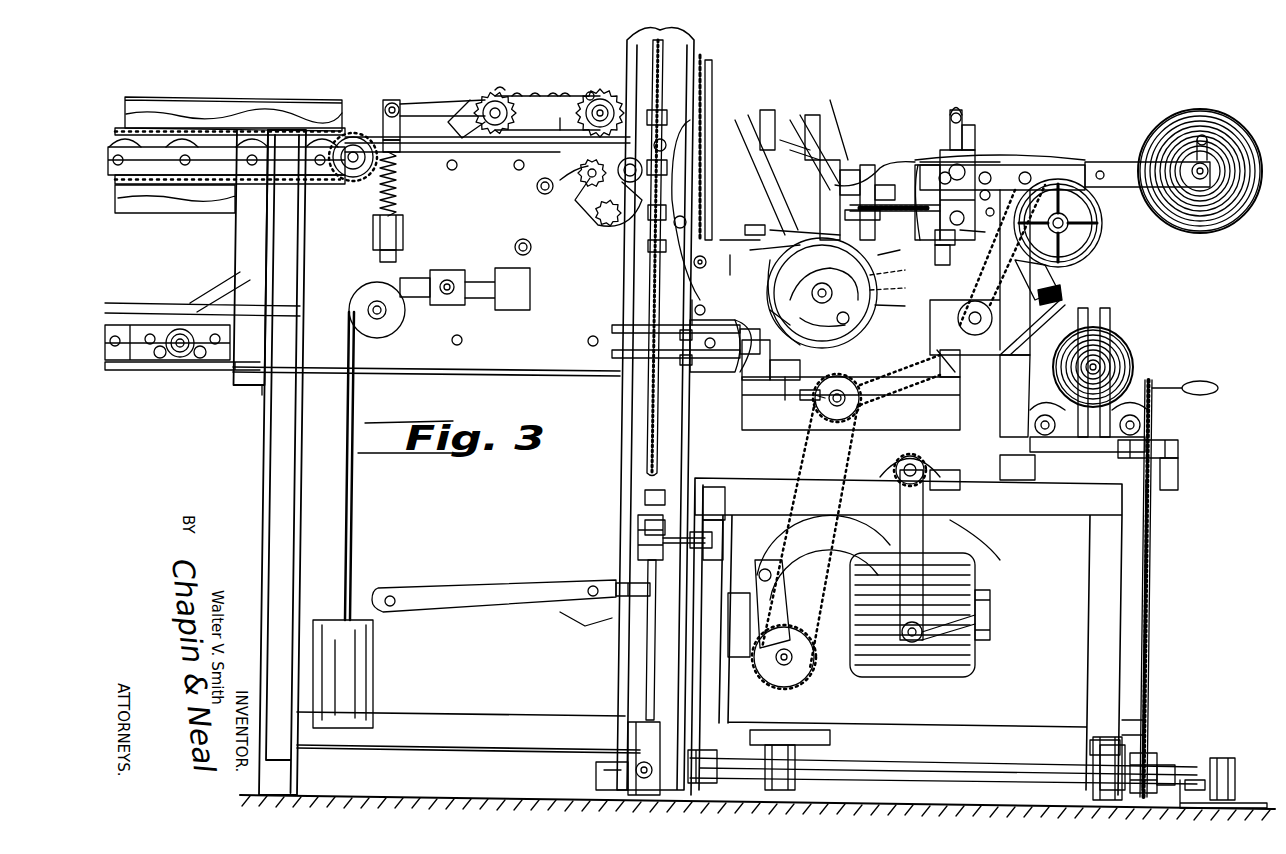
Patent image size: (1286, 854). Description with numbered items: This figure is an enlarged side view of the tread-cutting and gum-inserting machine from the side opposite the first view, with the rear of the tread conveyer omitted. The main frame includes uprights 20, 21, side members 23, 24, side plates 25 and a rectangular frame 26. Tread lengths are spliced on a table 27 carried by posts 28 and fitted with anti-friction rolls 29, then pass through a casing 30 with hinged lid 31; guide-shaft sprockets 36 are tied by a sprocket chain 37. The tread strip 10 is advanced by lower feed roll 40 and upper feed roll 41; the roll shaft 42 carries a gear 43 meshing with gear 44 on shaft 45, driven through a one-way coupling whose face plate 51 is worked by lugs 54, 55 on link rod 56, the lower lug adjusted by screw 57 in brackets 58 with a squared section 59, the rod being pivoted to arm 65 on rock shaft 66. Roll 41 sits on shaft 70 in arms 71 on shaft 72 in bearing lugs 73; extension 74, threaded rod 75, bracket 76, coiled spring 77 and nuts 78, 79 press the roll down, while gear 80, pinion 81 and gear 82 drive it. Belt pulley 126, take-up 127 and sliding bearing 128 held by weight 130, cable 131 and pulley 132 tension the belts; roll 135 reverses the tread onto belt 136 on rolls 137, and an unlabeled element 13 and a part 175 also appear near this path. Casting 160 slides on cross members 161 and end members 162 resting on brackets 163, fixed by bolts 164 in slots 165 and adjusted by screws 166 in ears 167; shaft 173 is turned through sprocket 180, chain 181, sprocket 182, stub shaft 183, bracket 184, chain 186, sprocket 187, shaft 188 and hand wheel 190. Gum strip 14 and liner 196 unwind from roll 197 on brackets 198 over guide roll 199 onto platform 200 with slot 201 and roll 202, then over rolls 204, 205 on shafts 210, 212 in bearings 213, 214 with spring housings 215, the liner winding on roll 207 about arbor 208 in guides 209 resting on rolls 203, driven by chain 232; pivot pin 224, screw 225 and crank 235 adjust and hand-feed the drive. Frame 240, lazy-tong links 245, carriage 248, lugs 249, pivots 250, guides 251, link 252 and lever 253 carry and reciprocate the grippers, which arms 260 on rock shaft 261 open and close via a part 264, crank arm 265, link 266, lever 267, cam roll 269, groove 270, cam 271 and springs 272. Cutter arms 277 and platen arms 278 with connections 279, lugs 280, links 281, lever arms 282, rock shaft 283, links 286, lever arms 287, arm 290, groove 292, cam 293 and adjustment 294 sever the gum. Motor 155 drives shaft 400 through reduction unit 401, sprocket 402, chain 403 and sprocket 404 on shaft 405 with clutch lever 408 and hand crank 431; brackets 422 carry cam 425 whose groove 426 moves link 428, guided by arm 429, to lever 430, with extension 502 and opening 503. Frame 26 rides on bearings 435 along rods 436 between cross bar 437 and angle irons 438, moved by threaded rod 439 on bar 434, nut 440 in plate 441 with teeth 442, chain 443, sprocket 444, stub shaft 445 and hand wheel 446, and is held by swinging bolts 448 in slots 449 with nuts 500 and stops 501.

The tread strip 10 is at (160, 303).
The shaft 13 is at (740, 332).
The gum strip 14 is at (885, 180).
The uprights 20 is at (626, 472).
The uprights 21 is at (266, 455).
The longitudinal side member 23 is at (462, 714).
The longitudinal side member 24 is at (125, 350).
The side plates 25 is at (490, 374).
The rectangular frame member 26 is at (1090, 540).
The table member 27 is at (114, 175).
The posts 28 is at (236, 254).
The anti-friction rolls 29 is at (165, 148).
The casing 30 is at (238, 106).
The hinged lid 31 is at (182, 98).
The sprockets 36 is at (350, 178).
The sprocket chain 37 is at (112, 128).
The lower feed roll 40 is at (560, 160).
The upper feed roll 41 is at (578, 90).
The shaft 42 is at (550, 196).
The gear 43 is at (583, 185).
The gear 44 is at (598, 186).
The shaft 45 is at (655, 145).
The face plate 51 is at (600, 222).
The upper lug 54 is at (630, 182).
The lower lug 55 is at (612, 225).
The link rod 56 is at (650, 414).
The screw 57 is at (690, 120).
The brackets 58 is at (655, 108).
The squared section 59 is at (690, 215).
The arm 65 is at (628, 775).
The rock shaft 66 is at (596, 775).
The shaft 70 is at (606, 92).
The arms 71 is at (528, 100).
The shaft 72 is at (492, 130).
The bearing lugs 73 is at (458, 112).
The extension 74 is at (400, 104).
The threaded rod 75 is at (400, 150).
The bracket 76 is at (403, 238).
The coiled spring 77 is at (398, 193).
The nuts 78 is at (400, 168).
The nuts 79 is at (380, 256).
The gear 80 is at (590, 92).
The pinion 81 is at (545, 92).
The gear 82 is at (495, 90).
The pulley 126 is at (445, 296).
The take-up 127 is at (698, 258).
The sliding bearing 128 is at (455, 272).
The weight 130 is at (360, 668).
The cable 131 is at (353, 508).
The pulley 132 is at (378, 325).
The roll 135 is at (695, 300).
The belt 136 is at (215, 372).
The rolls 137 is at (180, 358).
The motor 155 is at (992, 612).
The casting 160 is at (918, 160).
The cross members 161 is at (756, 380).
The end members 162 is at (805, 400).
The brackets 163 is at (960, 400).
The bolts 164 is at (800, 400).
The slots 165 is at (880, 400).
The screws 166 is at (730, 372).
The ears 167 is at (737, 380).
The shaft 173 is at (815, 400).
The bracket 175 is at (748, 360).
The sprocket 180 is at (837, 402).
The chain 181 is at (850, 408).
The sprocket 182 is at (975, 345).
The stub shaft 183 is at (992, 318).
The bracket 184 is at (1048, 272).
The chain 186 is at (1050, 265).
The sprocket 187 is at (1100, 210).
The shaft 188 is at (1069, 224).
The hand wheel 190 is at (1092, 240).
The liner 196 is at (1010, 420).
The roll 197 is at (1203, 236).
The brackets 198 is at (1128, 162).
The guide roll 199 is at (1100, 170).
The platform 200 is at (1050, 160).
The slot 201 is at (1005, 160).
The roll 202 is at (1001, 209).
The rolls 203 is at (1045, 410).
The roll 204 is at (999, 193).
The roll 205 is at (930, 195).
The roll 207 is at (1132, 352).
The arbor 208 is at (1100, 366).
The guides 209 is at (1110, 305).
The shaft 210 is at (975, 148).
The shaft 212 is at (954, 239).
The sliding bearings 213 is at (950, 140).
The sliding bearings 214 is at (989, 225).
The housings 215 is at (975, 130).
The pivot pin 224 is at (955, 258).
The screw 225 is at (1062, 294).
The chain 232 is at (1040, 345).
The crank 235 is at (962, 110).
The horizontal frame 240 is at (815, 115).
The lazy-tong links 245 is at (755, 115).
The carriage 248 is at (700, 305).
The lugs 249 is at (745, 100).
The pivots 250 is at (770, 108).
The guides 251 is at (800, 233).
The link 252 is at (867, 162).
The lever 253 is at (885, 183).
The arms 260 is at (848, 168).
The rock shaft 261 is at (838, 100).
The block 264 is at (812, 112).
The crank arm 265 is at (832, 158).
The link 266 is at (858, 222).
The lever 267 is at (907, 303).
The cam roll 269 is at (904, 268).
The groove 270 is at (906, 286).
The cam 271 is at (907, 248).
The springs 272 is at (895, 203).
The cutter arms 277 is at (710, 80).
The arms 278 is at (722, 242).
The bolt and slot connections 279 is at (795, 140).
The lugs 280 is at (805, 148).
The links 281 is at (730, 265).
The lever arms 282 is at (775, 250).
The rock shaft 283 is at (790, 325).
The links 286 is at (765, 230).
The lever arms 287 is at (775, 300).
The arm 290 is at (810, 296).
The groove 292 is at (785, 380).
The cam 293 is at (790, 400).
The adjustable securing 294 is at (843, 322).
The shaft 400 is at (778, 672).
The gear reduction unit 401 is at (838, 560).
The sprocket 402 is at (792, 668).
The chain 403 is at (925, 520).
The sprocket 404 is at (912, 456).
The shaft 405 is at (945, 482).
The clutch shifting lever 408 is at (1020, 480).
The brackets 422 is at (950, 680).
The cam 425 is at (975, 545).
The cam groove 426 is at (855, 545).
The link 428 is at (755, 560).
The guide arm 429 is at (745, 630).
The lever 430 is at (585, 626).
The hand crank 431 is at (950, 618).
The bar 434 is at (1090, 748).
The bearing members 435 is at (1100, 750).
The horizontal rods 436 is at (1195, 768).
The cross bar 437 is at (705, 750).
The angle irons 438 is at (1240, 795).
The threaded rod 439 is at (1175, 772).
The nut 440 is at (1155, 765).
The plate 441 is at (1125, 725).
The sprocket teeth 442 is at (1125, 750).
The sprocket chain 443 is at (1150, 606).
The sprocket 444 is at (1178, 472).
The stub shaft 445 is at (1180, 448).
The hand wheel 446 is at (1160, 410).
The swinging bolts 448 is at (668, 520).
The slots 449 is at (708, 548).
The nuts 500 is at (723, 530).
The adjustable stops 501 is at (725, 500).
The extension 502 is at (465, 592).
The opening 503 is at (390, 596).